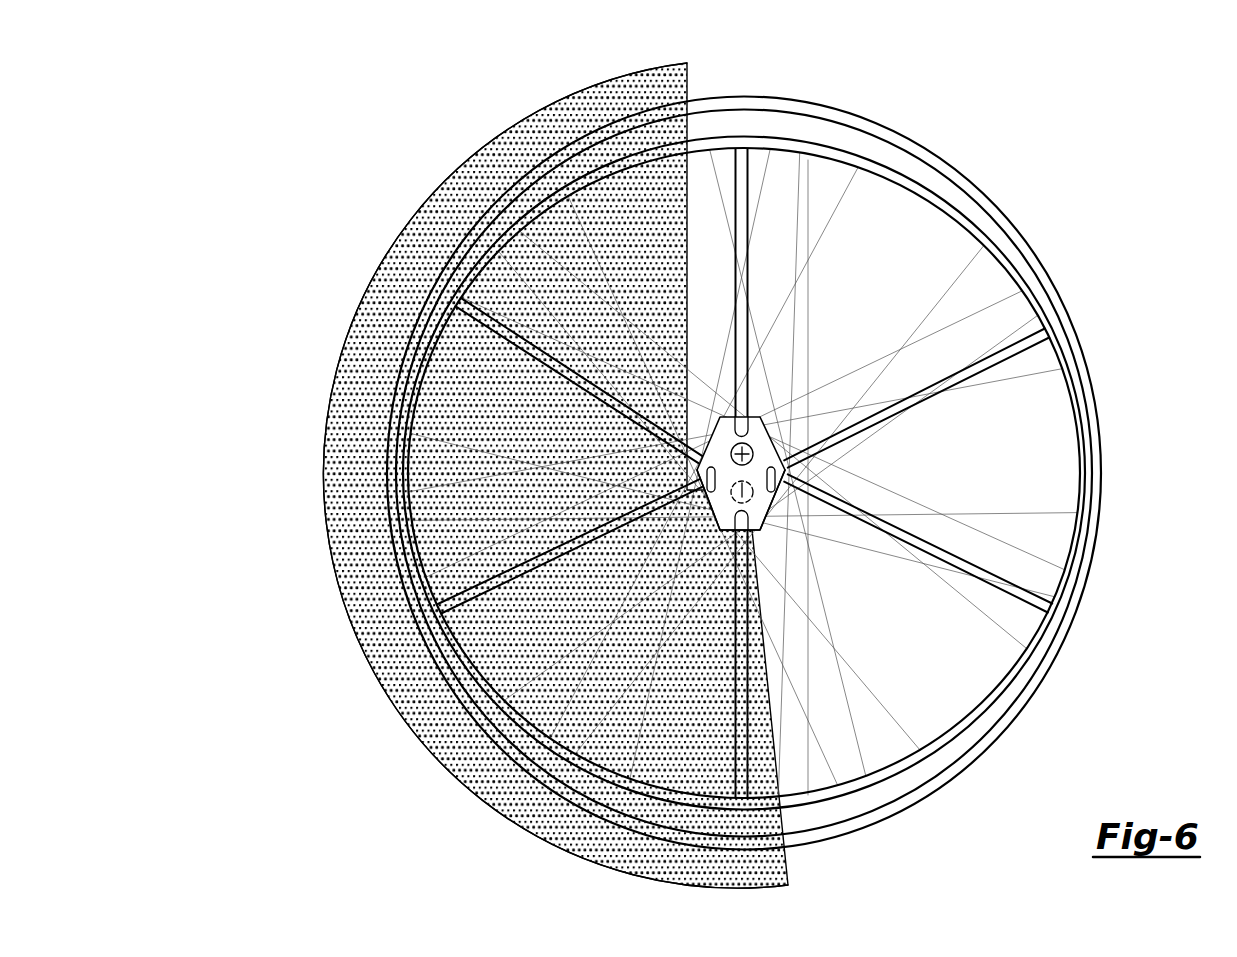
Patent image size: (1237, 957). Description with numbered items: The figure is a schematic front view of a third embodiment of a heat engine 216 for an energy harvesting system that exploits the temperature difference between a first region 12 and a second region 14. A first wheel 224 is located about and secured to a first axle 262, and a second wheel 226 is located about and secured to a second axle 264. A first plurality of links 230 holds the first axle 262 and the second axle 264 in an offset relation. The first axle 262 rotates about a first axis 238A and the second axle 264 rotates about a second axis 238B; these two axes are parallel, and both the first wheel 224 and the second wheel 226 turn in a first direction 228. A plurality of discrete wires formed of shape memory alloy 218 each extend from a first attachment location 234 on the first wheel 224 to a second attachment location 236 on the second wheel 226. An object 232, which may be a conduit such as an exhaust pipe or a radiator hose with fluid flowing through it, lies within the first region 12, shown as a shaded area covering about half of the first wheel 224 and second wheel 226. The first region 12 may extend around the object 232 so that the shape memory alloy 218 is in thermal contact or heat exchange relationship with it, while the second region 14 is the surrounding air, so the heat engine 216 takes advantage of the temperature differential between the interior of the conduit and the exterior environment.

The first region 12 is at (343, 470).
The second region 14 is at (1126, 235).
The heat engine 216 is at (262, 383).
The shape memory alloy 218 is at (1010, 477).
The first wheel 224 is at (960, 170).
The second wheel 226 is at (1043, 318).
The first direction 228 is at (868, 103).
The first plurality of links 230 is at (707, 477).
The object 232 is at (353, 326).
The first attachment location 234 is at (695, 150).
The second attachment location 236 is at (913, 791).
The first axis 238A is at (731, 457).
The second axis 238B is at (740, 494).
The first axle 262 is at (703, 442).
The second axle 264 is at (710, 515).